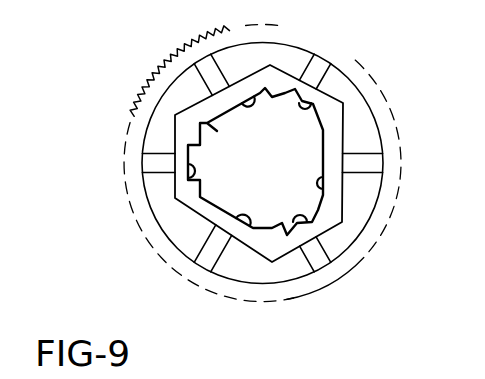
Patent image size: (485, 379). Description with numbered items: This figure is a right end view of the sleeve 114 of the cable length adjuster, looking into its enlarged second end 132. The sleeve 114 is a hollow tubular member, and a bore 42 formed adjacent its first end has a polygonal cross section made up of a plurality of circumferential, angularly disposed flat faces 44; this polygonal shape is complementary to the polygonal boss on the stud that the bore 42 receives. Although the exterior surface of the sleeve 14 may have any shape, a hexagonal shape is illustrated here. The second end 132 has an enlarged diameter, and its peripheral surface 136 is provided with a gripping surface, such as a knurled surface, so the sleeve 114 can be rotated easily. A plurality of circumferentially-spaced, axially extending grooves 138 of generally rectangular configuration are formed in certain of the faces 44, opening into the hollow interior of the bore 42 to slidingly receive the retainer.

The sleeve 114 is at (124, 88).
The peripheral surface 136 is at (214, 30).
The second end 132 is at (355, 58).
The bore 42 is at (174, 116).
The flat faces 44 is at (258, 92).
The grooves 138 is at (308, 103).
The sleeve 14 is at (473, 304).